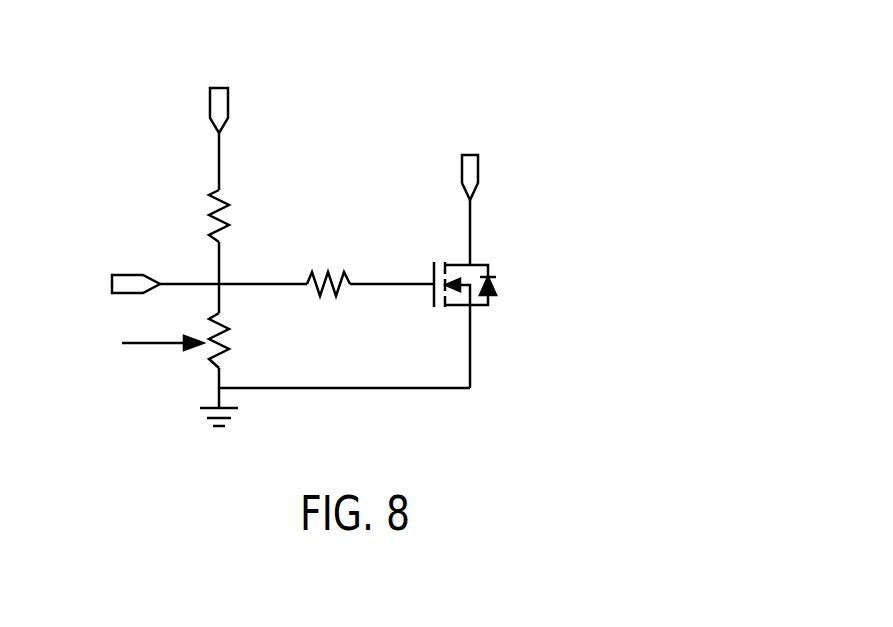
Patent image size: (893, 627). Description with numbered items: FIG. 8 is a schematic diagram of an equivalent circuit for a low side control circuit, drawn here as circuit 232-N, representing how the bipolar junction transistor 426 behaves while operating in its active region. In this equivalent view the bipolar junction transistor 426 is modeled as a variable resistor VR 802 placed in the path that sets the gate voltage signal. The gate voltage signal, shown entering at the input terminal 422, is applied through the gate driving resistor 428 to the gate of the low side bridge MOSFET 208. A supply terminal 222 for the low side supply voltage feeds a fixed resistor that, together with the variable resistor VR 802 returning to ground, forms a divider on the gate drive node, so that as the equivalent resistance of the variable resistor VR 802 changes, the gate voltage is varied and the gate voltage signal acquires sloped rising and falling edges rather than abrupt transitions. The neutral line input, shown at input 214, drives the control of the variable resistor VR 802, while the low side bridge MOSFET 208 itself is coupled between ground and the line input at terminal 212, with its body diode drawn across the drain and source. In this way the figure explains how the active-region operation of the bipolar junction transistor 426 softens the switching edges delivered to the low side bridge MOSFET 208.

The gate driver circuit 232-N is at (326, 86).
The Vcc_L supply terminal 222 is at (210, 102).
The Vgs_HN input terminal 422 is at (128, 275).
The gate driving resistor 428 is at (328, 270).
The variable resistor VR 802 is at (290, 340).
The bipolar junction transistor 426 is at (236, 321).
The AC_N input 214 is at (133, 346).
The terminal 212 is at (478, 168).
The low side bridge MOSFET 208 is at (476, 260).